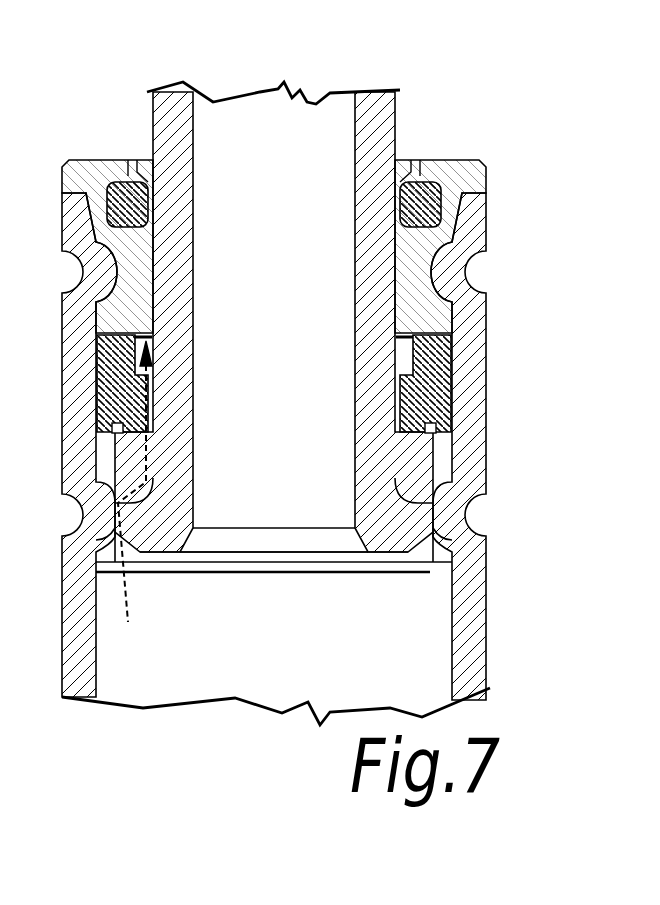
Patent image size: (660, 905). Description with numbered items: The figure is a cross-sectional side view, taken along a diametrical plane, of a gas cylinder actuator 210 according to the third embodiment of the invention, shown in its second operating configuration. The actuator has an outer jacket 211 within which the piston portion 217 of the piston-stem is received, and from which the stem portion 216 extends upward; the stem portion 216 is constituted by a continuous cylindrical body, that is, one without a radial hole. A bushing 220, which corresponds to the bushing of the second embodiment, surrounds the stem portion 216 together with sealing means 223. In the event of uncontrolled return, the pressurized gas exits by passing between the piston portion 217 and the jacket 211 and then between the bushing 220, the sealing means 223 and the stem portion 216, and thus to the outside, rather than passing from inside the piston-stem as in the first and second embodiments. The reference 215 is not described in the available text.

The gas cylinder actuator 210 is at (303, 375).
The jacket 211 is at (474, 604).
The tube 215 is at (283, 83).
The stem portion 216 is at (176, 91).
The piston portion 217 is at (386, 518).
The bushing 220 is at (447, 442).
The sealing means 223 is at (97, 357).